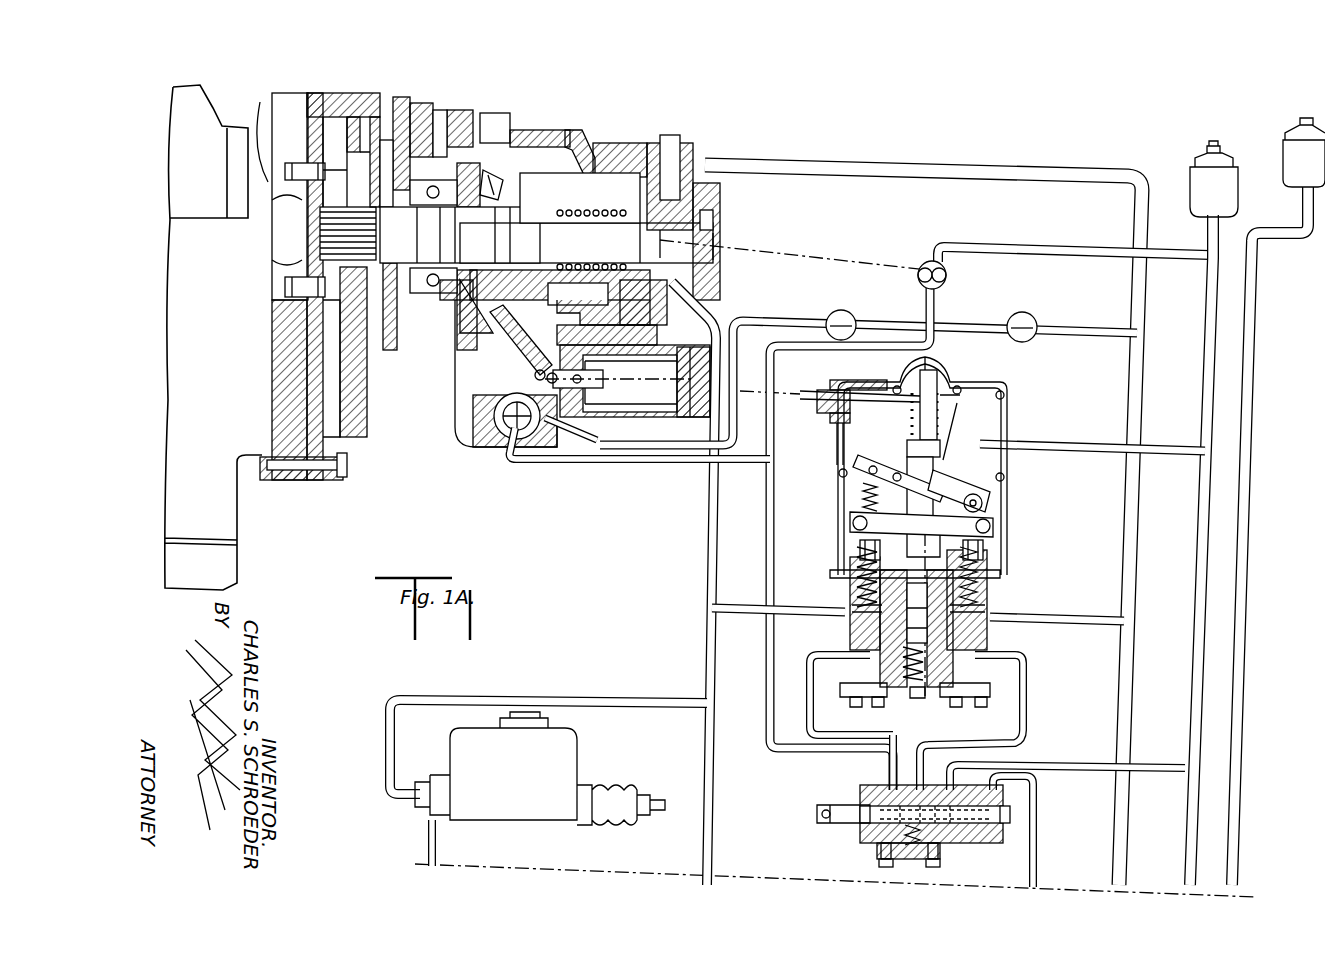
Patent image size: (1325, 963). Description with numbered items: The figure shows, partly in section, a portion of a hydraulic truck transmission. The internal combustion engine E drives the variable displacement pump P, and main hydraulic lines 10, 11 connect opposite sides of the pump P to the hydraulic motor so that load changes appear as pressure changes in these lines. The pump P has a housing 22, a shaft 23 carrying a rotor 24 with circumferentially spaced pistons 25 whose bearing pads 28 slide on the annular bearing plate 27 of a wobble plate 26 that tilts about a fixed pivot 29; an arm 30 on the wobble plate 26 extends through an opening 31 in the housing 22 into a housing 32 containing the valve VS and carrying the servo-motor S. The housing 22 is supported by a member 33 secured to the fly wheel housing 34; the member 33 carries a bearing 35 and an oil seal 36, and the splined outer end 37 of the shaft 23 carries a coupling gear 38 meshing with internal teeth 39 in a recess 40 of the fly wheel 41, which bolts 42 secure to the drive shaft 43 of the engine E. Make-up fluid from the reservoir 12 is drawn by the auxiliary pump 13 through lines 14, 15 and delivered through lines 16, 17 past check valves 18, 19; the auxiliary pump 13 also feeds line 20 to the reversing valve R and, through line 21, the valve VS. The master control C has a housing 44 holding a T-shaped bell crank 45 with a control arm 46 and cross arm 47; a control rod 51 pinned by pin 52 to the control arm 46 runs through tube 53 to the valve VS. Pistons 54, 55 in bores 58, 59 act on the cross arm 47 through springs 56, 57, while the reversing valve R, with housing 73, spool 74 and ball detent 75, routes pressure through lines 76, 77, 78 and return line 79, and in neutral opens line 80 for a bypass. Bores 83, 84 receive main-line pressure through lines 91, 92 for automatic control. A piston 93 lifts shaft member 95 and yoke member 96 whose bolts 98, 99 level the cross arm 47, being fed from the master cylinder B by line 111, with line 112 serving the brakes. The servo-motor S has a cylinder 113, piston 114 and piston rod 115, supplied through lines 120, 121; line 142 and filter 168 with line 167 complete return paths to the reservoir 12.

The main hydraulic line 10 is at (1138, 558).
The main hydraulic line 11 is at (712, 560).
The reservoir 12 is at (1283, 155).
The auxiliary pump 13 is at (947, 282).
The hydraulic line 14 is at (1268, 240).
The hydraulic line 15 is at (1090, 247).
The hydraulic line 16 is at (768, 318).
The hydraulic line 17 is at (1082, 327).
The check valve 18 is at (840, 310).
The check valve 19 is at (1028, 316).
The hydraulic line 20 is at (773, 515).
The hydraulic line 21 is at (693, 450).
The housing 22 is at (563, 135).
The shaft 23 is at (540, 190).
The cylinder block or rotor 24 is at (607, 160).
The pistons 25 is at (530, 135).
The wobble plate 26 is at (482, 308).
The annular bearing plate 27 is at (520, 335).
The bearing pads 28 is at (510, 180).
The fixed pivot 29 is at (478, 248).
The arm 30 is at (514, 384).
The opening 31 is at (462, 370).
The housing 32 is at (470, 404).
The member 33 is at (440, 125).
The fly wheel housing 34 is at (340, 452).
The bearing 35 is at (492, 118).
The oil seal 36 is at (432, 185).
The splined outer end 37 is at (372, 234).
The coupling gear 38 is at (300, 352).
The internal teeth 39 is at (330, 322).
The recess 40 is at (335, 330).
The fly wheel 41 is at (368, 450).
The bolts 42 is at (285, 286).
The drive shaft 43 is at (275, 258).
The housing 44 is at (1010, 420).
The T-shaped bell crank 45 is at (954, 470).
The control arm 46 is at (955, 420).
The cross arm 47 is at (900, 462).
The control rod 51 is at (631, 376).
The pin 52 is at (957, 405).
The tube 53 is at (823, 390).
The fluid-actuated piston 54 is at (848, 583).
The fluid-actuated piston 55 is at (990, 637).
The helical compression spring 56 is at (863, 490).
The helical compression spring 57 is at (985, 583).
The bore 58 is at (855, 668).
The bore 59 is at (985, 672).
The housing 73 is at (948, 780).
The spool 74 is at (958, 825).
The spring pressed ball detent 75 is at (880, 840).
The hydraulic line 76 is at (897, 748).
The hydraulic line 77 is at (1027, 730).
The hydraulic line 78 is at (1082, 762).
The return line 79 is at (1194, 740).
The line 80 is at (1038, 846).
The bore 83 is at (990, 600).
The bore 84 is at (850, 603).
The hydraulic line 91 is at (1078, 622).
The hydraulic line 92 is at (783, 612).
The piston 93 is at (875, 690).
The shaft member 95 is at (905, 625).
The yoke member 96 is at (990, 515).
The bolt 98 is at (858, 548).
The bolt 99 is at (985, 549).
The hydraulic line 111 is at (638, 700).
The hydraulic line 112 is at (438, 843).
The cylinder 113 is at (650, 412).
The piston 114 is at (688, 352).
The piston rod 115 is at (620, 392).
The hydraulic line 120 is at (555, 465).
The hydraulic line 121 is at (588, 440).
The hydraulic line 142 is at (1100, 444).
The line 167 is at (1244, 670).
The filter 168 is at (1192, 175).
The variable displacement pump P is at (475, 292).
The internal combustion engine E is at (259, 522).
The servo-motor S is at (628, 408).
The valve VS is at (489, 381).
The master control C is at (937, 535).
The master cylinder B is at (600, 762).
The reversing valve R is at (891, 831).